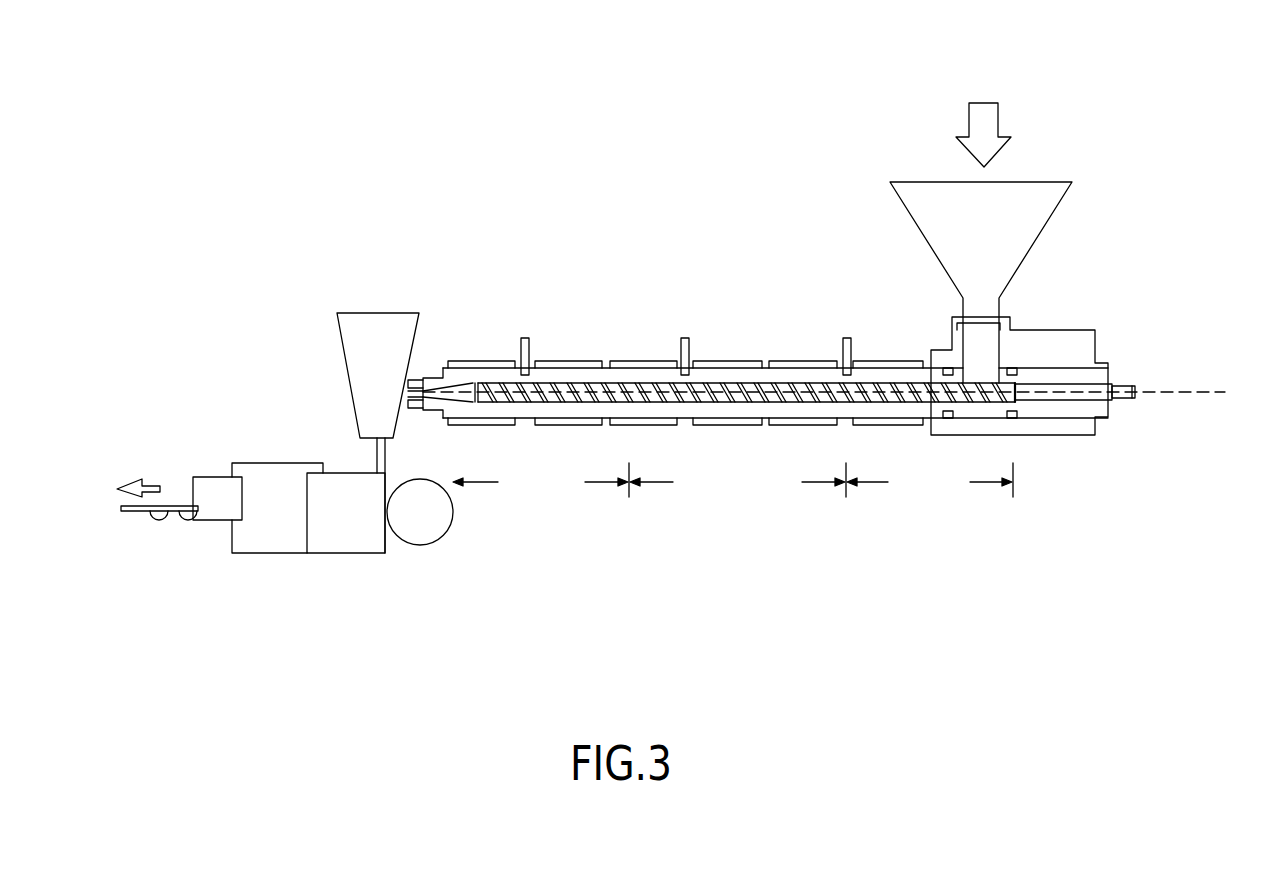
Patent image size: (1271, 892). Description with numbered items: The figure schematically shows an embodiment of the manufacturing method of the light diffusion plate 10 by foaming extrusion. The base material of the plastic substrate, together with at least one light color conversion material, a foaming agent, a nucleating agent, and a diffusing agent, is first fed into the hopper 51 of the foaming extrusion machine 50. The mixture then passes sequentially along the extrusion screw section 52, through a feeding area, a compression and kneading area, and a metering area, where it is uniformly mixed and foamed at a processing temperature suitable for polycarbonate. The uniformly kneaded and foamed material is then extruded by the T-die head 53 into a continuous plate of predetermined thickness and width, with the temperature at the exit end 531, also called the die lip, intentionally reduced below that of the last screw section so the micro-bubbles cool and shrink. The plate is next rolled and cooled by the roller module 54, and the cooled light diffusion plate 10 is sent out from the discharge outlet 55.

The foaming extrusion machine 50 is at (516, 196).
The hopper 51 is at (1005, 181).
The extrusion screw section 52 is at (735, 385).
The T-die head 53 is at (362, 322).
The exit end 531 is at (382, 462).
The roller module 54 is at (348, 538).
The discharge outlet 55 is at (193, 487).
The light diffusion plate 10 is at (118, 506).